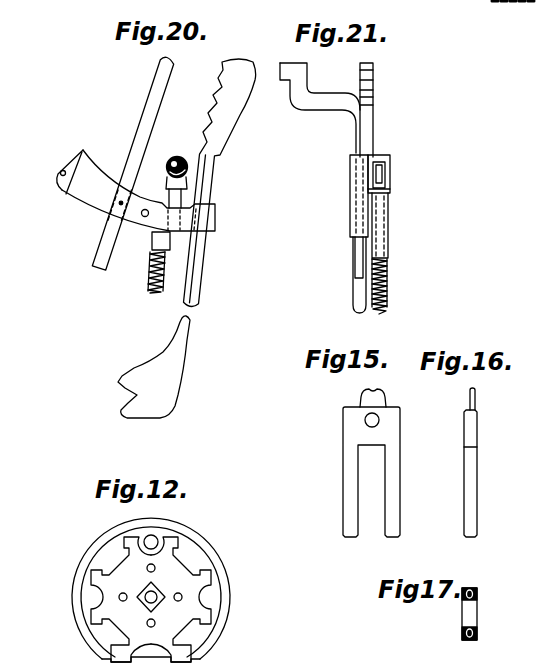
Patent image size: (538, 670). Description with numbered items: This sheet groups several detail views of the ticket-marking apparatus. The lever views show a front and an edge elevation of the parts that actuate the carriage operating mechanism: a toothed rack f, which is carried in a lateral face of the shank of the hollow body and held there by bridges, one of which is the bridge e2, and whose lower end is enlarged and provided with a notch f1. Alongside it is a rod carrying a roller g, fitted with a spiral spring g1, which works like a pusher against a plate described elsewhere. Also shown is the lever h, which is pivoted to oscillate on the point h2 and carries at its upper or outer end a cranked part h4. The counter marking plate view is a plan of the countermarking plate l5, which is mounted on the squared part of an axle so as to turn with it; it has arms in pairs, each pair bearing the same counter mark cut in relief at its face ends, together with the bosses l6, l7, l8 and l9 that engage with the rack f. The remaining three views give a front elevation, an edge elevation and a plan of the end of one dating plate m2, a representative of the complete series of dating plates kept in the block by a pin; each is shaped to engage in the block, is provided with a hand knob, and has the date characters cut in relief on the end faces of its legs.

In FIG. 20, the toothed rack f is at (188, 321).
In FIG. 21, the toothed rack f is at (374, 88).
In FIG. 20, the notch f1 is at (130, 395).
In FIG. 20, the lever h is at (100, 257).
In FIG. 21, the lever h is at (355, 134).
In FIG. 20, the pivot point h2 is at (113, 182).
In FIG. 21, the pivot point h2 is at (360, 205).
In FIG. 21, the cranked part h4 is at (310, 105).
In FIG. 20, the bridge e2 is at (77, 191).
In FIG. 21, the bridge e2 is at (385, 224).
In FIG. 20, the roller g is at (177, 183).
In FIG. 21, the roller g is at (386, 188).
In FIG. 20, the spiral spring g1 is at (145, 280).
In FIG. 21, the spiral spring g1 is at (389, 272).
In FIG. 15, the dating plate m2 is at (467, 463).
In FIG. 12, the countermarking plate l5 is at (66, 589).
In FIG. 12, the boss l6 is at (189, 547).
In FIG. 12, the boss l7 is at (77, 608).
In FIG. 12, the boss l8 is at (97, 641).
In FIG. 12, the boss l9 is at (218, 596).